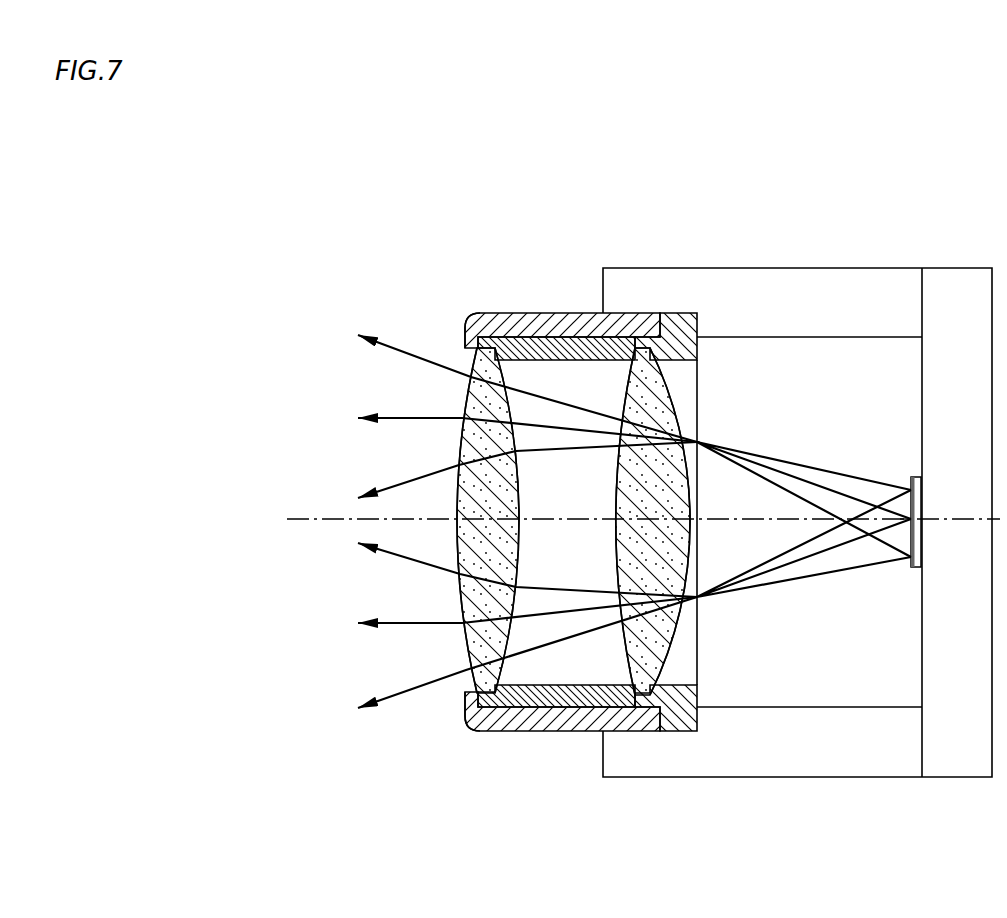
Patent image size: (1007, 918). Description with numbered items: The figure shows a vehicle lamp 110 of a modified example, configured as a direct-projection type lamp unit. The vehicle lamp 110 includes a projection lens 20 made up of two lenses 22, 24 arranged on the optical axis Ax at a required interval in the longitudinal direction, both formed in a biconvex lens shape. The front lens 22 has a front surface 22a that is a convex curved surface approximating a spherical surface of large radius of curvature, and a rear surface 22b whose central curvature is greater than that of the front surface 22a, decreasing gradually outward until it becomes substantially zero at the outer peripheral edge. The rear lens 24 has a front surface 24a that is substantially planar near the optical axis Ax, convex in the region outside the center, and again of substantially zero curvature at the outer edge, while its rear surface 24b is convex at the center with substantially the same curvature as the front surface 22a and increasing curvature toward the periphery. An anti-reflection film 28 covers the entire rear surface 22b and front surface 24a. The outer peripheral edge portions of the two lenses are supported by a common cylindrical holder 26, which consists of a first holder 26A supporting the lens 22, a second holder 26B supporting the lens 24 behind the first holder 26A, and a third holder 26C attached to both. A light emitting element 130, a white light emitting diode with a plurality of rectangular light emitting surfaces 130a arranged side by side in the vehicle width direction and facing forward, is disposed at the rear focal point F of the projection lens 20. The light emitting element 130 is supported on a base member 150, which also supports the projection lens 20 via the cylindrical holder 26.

The vehicle lamp 110 is at (322, 175).
The base member 150 is at (885, 268).
The projection lens 20 is at (330, 273).
The lens 22 is at (458, 388).
The front surface 22a is at (458, 552).
The rear surface 22b is at (521, 552).
The lens 24 is at (624, 390).
The front surface 24a is at (617, 490).
The rear surface 24b is at (690, 490).
The cylindrical holder 26 is at (507, 733).
The first holder 26A is at (600, 733).
The second holder 26B is at (676, 722).
The third holder 26C is at (478, 731).
The anti-reflection film 28 is at (563, 707).
The light emitting element 130 is at (910, 547).
The light emitting surfaces 130a is at (890, 538).
The optical axis Ax is at (345, 518).
The rear focal point F is at (907, 518).